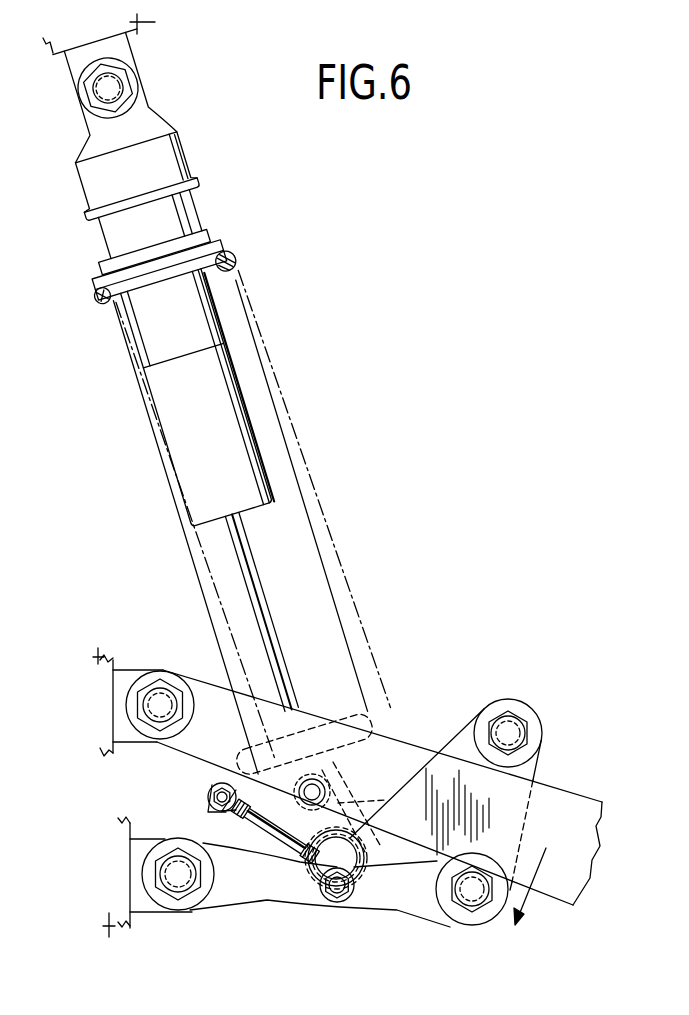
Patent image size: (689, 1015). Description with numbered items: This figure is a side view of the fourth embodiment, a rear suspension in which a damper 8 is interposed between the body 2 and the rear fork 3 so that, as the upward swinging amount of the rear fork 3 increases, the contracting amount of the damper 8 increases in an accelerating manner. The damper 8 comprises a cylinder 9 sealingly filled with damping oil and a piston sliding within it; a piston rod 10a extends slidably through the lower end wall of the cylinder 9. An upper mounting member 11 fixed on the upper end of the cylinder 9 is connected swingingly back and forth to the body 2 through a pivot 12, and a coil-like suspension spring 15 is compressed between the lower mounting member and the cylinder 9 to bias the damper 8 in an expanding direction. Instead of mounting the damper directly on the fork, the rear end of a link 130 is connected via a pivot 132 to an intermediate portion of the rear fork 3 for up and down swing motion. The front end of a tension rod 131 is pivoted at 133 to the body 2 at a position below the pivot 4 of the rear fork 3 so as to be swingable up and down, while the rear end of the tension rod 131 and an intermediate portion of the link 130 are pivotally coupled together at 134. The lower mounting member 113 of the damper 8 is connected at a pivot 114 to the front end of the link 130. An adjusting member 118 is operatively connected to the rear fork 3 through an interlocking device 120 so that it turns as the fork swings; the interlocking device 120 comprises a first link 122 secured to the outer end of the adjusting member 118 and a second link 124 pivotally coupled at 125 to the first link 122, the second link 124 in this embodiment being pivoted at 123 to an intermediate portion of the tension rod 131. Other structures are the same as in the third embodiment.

The body 2 is at (106, 488).
The rear fork 3 is at (542, 892).
The pivot 4 is at (156, 690).
The damper 8 is at (252, 377).
The cylinder 9 is at (272, 440).
The piston rod 10a is at (250, 598).
The upper mounting member 11 is at (94, 143).
The pivot 12 is at (93, 88).
The suspension spring 15 is at (235, 262).
The lower mounting member 113 is at (365, 832).
The pivot 114 is at (361, 847).
The adjusting member 118 is at (330, 780).
The interlocking device 120 is at (207, 813).
The first link 122 is at (259, 783).
The pivot 123 is at (338, 902).
The second link 124 is at (252, 828).
The pivot 125 is at (209, 788).
The link 130 is at (449, 738).
The tension rod 131 is at (270, 893).
The pivot 132 is at (512, 718).
The pivot 133 is at (178, 895).
The pivot 134 is at (468, 913).